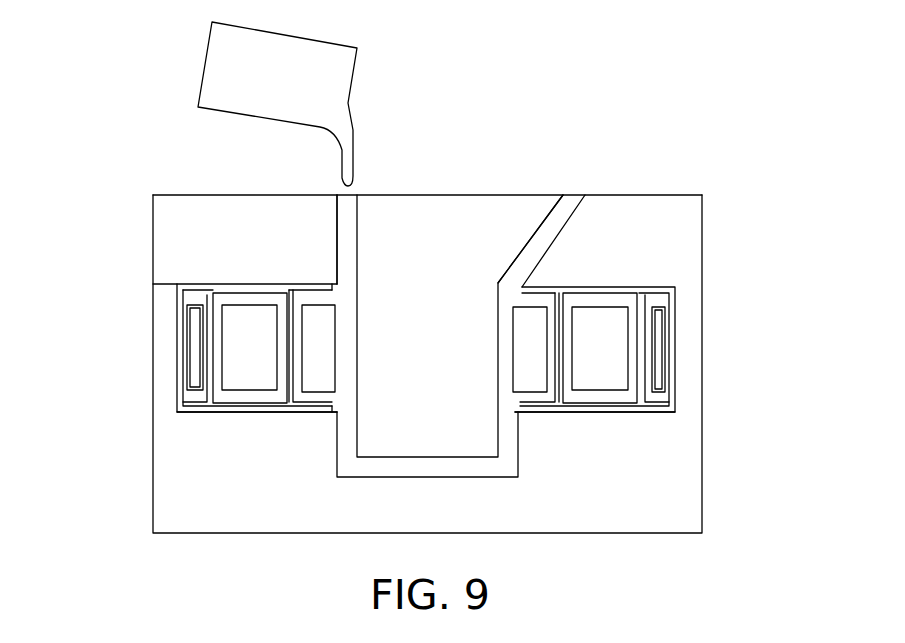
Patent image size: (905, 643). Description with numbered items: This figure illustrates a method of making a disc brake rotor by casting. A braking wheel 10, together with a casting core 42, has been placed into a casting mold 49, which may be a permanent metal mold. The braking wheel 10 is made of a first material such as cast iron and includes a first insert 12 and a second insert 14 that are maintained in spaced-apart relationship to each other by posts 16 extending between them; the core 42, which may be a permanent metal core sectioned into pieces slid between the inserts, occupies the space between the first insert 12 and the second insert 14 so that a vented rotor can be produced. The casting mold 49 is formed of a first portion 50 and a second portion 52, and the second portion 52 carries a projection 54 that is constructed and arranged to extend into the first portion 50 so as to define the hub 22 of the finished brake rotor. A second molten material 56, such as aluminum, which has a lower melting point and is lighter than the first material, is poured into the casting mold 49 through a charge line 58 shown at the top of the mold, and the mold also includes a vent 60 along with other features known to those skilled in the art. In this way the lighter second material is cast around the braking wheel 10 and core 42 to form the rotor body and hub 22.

The braking wheel 10 is at (656, 276).
The first insert 12 is at (250, 287).
The second insert 14 is at (217, 412).
The post 16 is at (288, 322).
The hub 22 is at (448, 469).
The casting core 42 is at (320, 370).
The casting mold 49 is at (654, 160).
The first portion of a casting mold 50 is at (212, 482).
The second portion of a casting mold 52 is at (250, 225).
The projection 54 is at (417, 425).
The second molten material 56 is at (347, 155).
The charge line 58 is at (343, 210).
The vent 60 is at (582, 193).